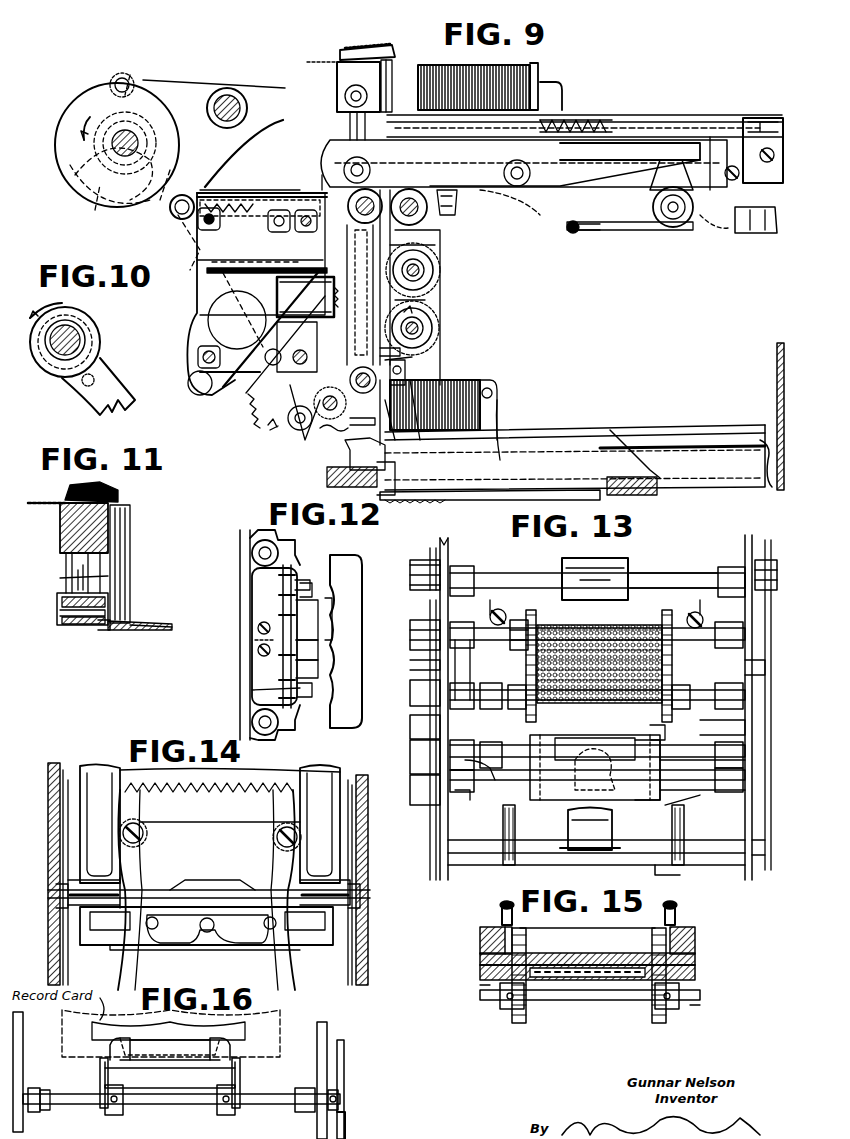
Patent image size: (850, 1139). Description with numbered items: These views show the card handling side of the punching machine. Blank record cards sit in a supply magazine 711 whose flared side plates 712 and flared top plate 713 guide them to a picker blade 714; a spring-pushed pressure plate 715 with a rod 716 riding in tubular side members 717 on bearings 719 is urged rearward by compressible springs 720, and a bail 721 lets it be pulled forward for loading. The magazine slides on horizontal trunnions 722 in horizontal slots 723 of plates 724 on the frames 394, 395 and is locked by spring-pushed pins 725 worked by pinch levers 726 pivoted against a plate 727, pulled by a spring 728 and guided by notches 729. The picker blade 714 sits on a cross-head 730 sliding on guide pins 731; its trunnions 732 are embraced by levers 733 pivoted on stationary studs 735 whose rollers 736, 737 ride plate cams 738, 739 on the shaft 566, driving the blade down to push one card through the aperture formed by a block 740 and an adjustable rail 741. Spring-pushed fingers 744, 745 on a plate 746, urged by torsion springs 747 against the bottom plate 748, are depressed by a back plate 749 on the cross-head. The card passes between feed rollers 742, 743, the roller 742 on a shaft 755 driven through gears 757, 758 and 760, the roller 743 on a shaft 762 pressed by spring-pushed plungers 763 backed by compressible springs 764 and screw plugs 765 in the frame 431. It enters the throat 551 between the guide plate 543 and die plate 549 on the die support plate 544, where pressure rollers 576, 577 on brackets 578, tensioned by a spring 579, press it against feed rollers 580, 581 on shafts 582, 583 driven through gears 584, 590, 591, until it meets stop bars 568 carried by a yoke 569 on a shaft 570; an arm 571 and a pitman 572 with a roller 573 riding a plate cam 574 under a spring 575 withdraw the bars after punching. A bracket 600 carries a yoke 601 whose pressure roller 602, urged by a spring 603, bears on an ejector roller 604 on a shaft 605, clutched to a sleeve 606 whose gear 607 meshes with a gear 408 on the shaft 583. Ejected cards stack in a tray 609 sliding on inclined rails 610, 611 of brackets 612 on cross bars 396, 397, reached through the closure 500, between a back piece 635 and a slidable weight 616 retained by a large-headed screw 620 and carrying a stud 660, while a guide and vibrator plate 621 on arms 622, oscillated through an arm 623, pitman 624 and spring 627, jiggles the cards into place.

In FIG. 13, the frame 394 is at (450, 548).
In FIG. 14, the frame 394 is at (62, 846).
In FIG. 16, the frame 394 is at (23, 1042).
In FIG. 13, the frame 395 is at (746, 540).
In FIG. 14, the frame 395 is at (370, 870).
In FIG. 16, the frame 395 is at (318, 1063).
In FIG. 9, the cross bar 396 is at (658, 488).
In FIG. 9, the cross bar 397 is at (327, 476).
In FIG. 13, the spacer 408 is at (455, 670).
In FIG. 9, the frame 431 is at (215, 245).
In FIG. 9, the closure 500 is at (776, 364).
In FIG. 9, the guide plate 543 is at (425, 240).
In FIG. 15, the guide plate 543 is at (480, 958).
In FIG. 16, the guide plate 543 is at (278, 1035).
In FIG. 9, the die support plate 544 is at (320, 238).
In FIG. 15, the die support plate 544 is at (480, 943).
In FIG. 9, the die plate 549 is at (433, 256).
In FIG. 13, the die plate 549 is at (640, 573).
In FIG. 15, the die plate 549 is at (480, 970).
In FIG. 9, the throat 551 is at (430, 304).
In FIG. 15, the throat 551 is at (624, 960).
In FIG. 9, the shaft 566 is at (115, 150).
In FIG. 10, the shaft 566 is at (75, 340).
In FIG. 9, the stop bars 568 is at (335, 388).
In FIG. 16, the stop bars 568 is at (170, 1049).
In FIG. 9, the yoke 569 is at (305, 445).
In FIG. 16, the yoke 569 is at (212, 1082).
In FIG. 9, the shaft 570 is at (300, 430).
In FIG. 13, the shaft 570 is at (680, 790).
In FIG. 16, the shaft 570 is at (128, 1108).
In FIG. 9, the arm 571 is at (268, 432).
In FIG. 13, the arm 571 is at (745, 840).
In FIG. 16, the arm 571 is at (346, 1124).
In FIG. 9, the pitman 572 is at (255, 400).
In FIG. 10, the pitman 572 is at (108, 390).
In FIG. 13, the pitman 572 is at (760, 666).
In FIG. 16, the pitman 572 is at (345, 1062).
In FIG. 10, the roller 573 is at (104, 360).
In FIG. 10, the plate cam 574 is at (92, 322).
In FIG. 9, the spring 575 is at (258, 420).
In FIG. 9, the pressure rollers 576 is at (348, 255).
In FIG. 15, the pressure rollers 576 is at (640, 933).
In FIG. 9, the pressure rollers 577 is at (325, 333).
In FIG. 9, the brackets 578 is at (307, 297).
In FIG. 15, the brackets 578 is at (480, 931).
In FIG. 9, the spring 579 is at (238, 284).
In FIG. 15, the spring 579 is at (500, 908).
In FIG. 9, the feed rollers 580 is at (430, 263).
In FIG. 13, the feed rollers 580 is at (552, 598).
In FIG. 15, the feed rollers 580 is at (630, 985).
In FIG. 9, the feed rollers 581 is at (436, 340).
In FIG. 13, the feed rollers 581 is at (555, 665).
In FIG. 9, the shaft 582 is at (438, 285).
In FIG. 13, the shaft 582 is at (483, 620).
In FIG. 15, the shaft 582 is at (624, 1005).
In FIG. 9, the shaft 583 is at (428, 324).
In FIG. 13, the shaft 583 is at (553, 685).
In FIG. 13, the gear 584 is at (425, 635).
In FIG. 13, the gear 590 is at (418, 690).
In FIG. 13, the gear 591 is at (418, 667).
In FIG. 9, the bracket 600 is at (406, 349).
In FIG. 13, the bracket 600 is at (667, 732).
In FIG. 9, the yoke 601 is at (425, 356).
In FIG. 9, the pressure roller 602 is at (440, 374).
In FIG. 13, the pressure roller 602 is at (612, 795).
In FIG. 9, the spring 603 is at (410, 372).
In FIG. 13, the spring 603 is at (595, 767).
In FIG. 9, the ejector roller 604 is at (418, 440).
In FIG. 13, the ejector roller 604 is at (578, 790).
In FIG. 9, the shaft 605 is at (361, 420).
In FIG. 13, the shaft 605 is at (735, 752).
In FIG. 9, the sleeve 606 is at (334, 429).
In FIG. 13, the sleeve 606 is at (515, 780).
In FIG. 13, the gear 607 is at (485, 790).
In FIG. 9, the tray 609 is at (723, 470).
In FIG. 13, the tray 609 is at (676, 872).
In FIG. 9, the inclined rail 610 is at (716, 430).
In FIG. 13, the inclined rail 610 is at (503, 816).
In FIG. 13, the inclined rail 611 is at (684, 823).
In FIG. 9, the brackets 612 is at (615, 430).
In FIG. 13, the brackets 612 is at (500, 850).
In FIG. 9, the weight 616 is at (492, 391).
In FIG. 9, the large-headed screw 620 is at (490, 496).
In FIG. 9, the guide and vibrator plate 621 is at (390, 440).
In FIG. 13, the guide and vibrator plate 621 is at (691, 807).
In FIG. 9, the arms 622 is at (350, 450).
In FIG. 13, the arms 622 is at (638, 848).
In FIG. 13, the arm 623 is at (418, 743).
In FIG. 13, the pitman 624 is at (418, 721).
In FIG. 13, the spring 627 is at (416, 775).
In FIG. 9, the back piece 635 is at (398, 472).
In FIG. 13, the back piece 635 is at (570, 850).
In FIG. 9, the stud 660 is at (499, 400).
In FIG. 9, the supply magazine 711 is at (714, 128).
In FIG. 11, the supply magazine 711 is at (58, 620).
In FIG. 12, the supply magazine 711 is at (250, 540).
In FIG. 14, the supply magazine 711 is at (82, 805).
In FIG. 9, the flared side plates 712 is at (420, 72).
In FIG. 9, the flared top plate 713 is at (393, 62).
In FIG. 11, the flared top plate 713 is at (120, 505).
In FIG. 9, the picker blade 714 is at (340, 50).
In FIG. 11, the picker blade 714 is at (66, 488).
In FIG. 9, the pressure plate 715 is at (530, 66).
In FIG. 9, the rod 716 is at (558, 116).
In FIG. 9, the tubular side members 717 is at (676, 122).
In FIG. 9, the bearings 719 is at (626, 150).
In FIG. 9, the compressible springs 720 is at (766, 108).
In FIG. 9, the bail 721 is at (557, 87).
In FIG. 9, the trunnions 722 is at (344, 168).
In FIG. 9, the horizontal slots 723 is at (505, 208).
In FIG. 9, the plates 724 is at (335, 150).
In FIG. 14, the plates 724 is at (62, 827).
In FIG. 9, the pins 725 is at (690, 206).
In FIG. 14, the pins 725 is at (55, 891).
In FIG. 9, the pinch levers 726 is at (758, 232).
In FIG. 14, the pinch levers 726 is at (280, 953).
In FIG. 9, the plate 727 is at (650, 238).
In FIG. 14, the plate 727 is at (236, 828).
In FIG. 9, the spring 728 is at (576, 236).
In FIG. 14, the spring 728 is at (152, 795).
In FIG. 9, the notches 729 is at (705, 236).
In FIG. 9, the cross-head 730 is at (337, 73).
In FIG. 11, the cross-head 730 is at (68, 528).
In FIG. 9, the guide pins 731 is at (350, 127).
In FIG. 11, the guide pins 731 is at (68, 560).
In FIG. 9, the trunnions 732 is at (345, 97).
In FIG. 9, the levers 733 is at (214, 127).
In FIG. 9, the stationary studs 735 is at (230, 97).
In FIG. 9, the roller 736 is at (135, 82).
In FIG. 9, the roller 737 is at (173, 216).
In FIG. 9, the plate cam 738 is at (97, 213).
In FIG. 9, the plate cam 739 is at (68, 186).
In FIG. 11, the block 740 is at (98, 626).
In FIG. 12, the block 740 is at (310, 642).
In FIG. 11, the adjustable rail 741 is at (120, 632).
In FIG. 12, the adjustable rail 741 is at (310, 666).
In FIG. 9, the feed roller 742 is at (450, 212).
In FIG. 13, the feed roller 742 is at (610, 565).
In FIG. 9, the feed roller 743 is at (350, 227).
In FIG. 12, the finger 744 is at (312, 588).
In FIG. 11, the finger 745 is at (104, 631).
In FIG. 12, the finger 745 is at (312, 690).
In FIG. 12, the plate 746 is at (262, 598).
In FIG. 12, the torsion springs 747 is at (240, 682).
In FIG. 11, the bottom plate 748 is at (155, 632).
In FIG. 12, the bottom plate 748 is at (360, 578).
In FIG. 13, the bottom plate 748 is at (409, 575).
In FIG. 11, the back plate 749 is at (62, 578).
In FIG. 12, the back plate 749 is at (309, 573).
In FIG. 9, the shaft 755 is at (415, 190).
In FIG. 13, the shaft 755 is at (540, 570).
In FIG. 13, the gear 757 is at (428, 553).
In FIG. 13, the gear 758 is at (418, 612).
In FIG. 13, the gear 760 is at (755, 572).
In FIG. 9, the shaft 762 is at (375, 190).
In FIG. 9, the plungers 763 is at (322, 184).
In FIG. 9, the compressible springs 764 is at (215, 195).
In FIG. 9, the screw plugs 765 is at (220, 190).